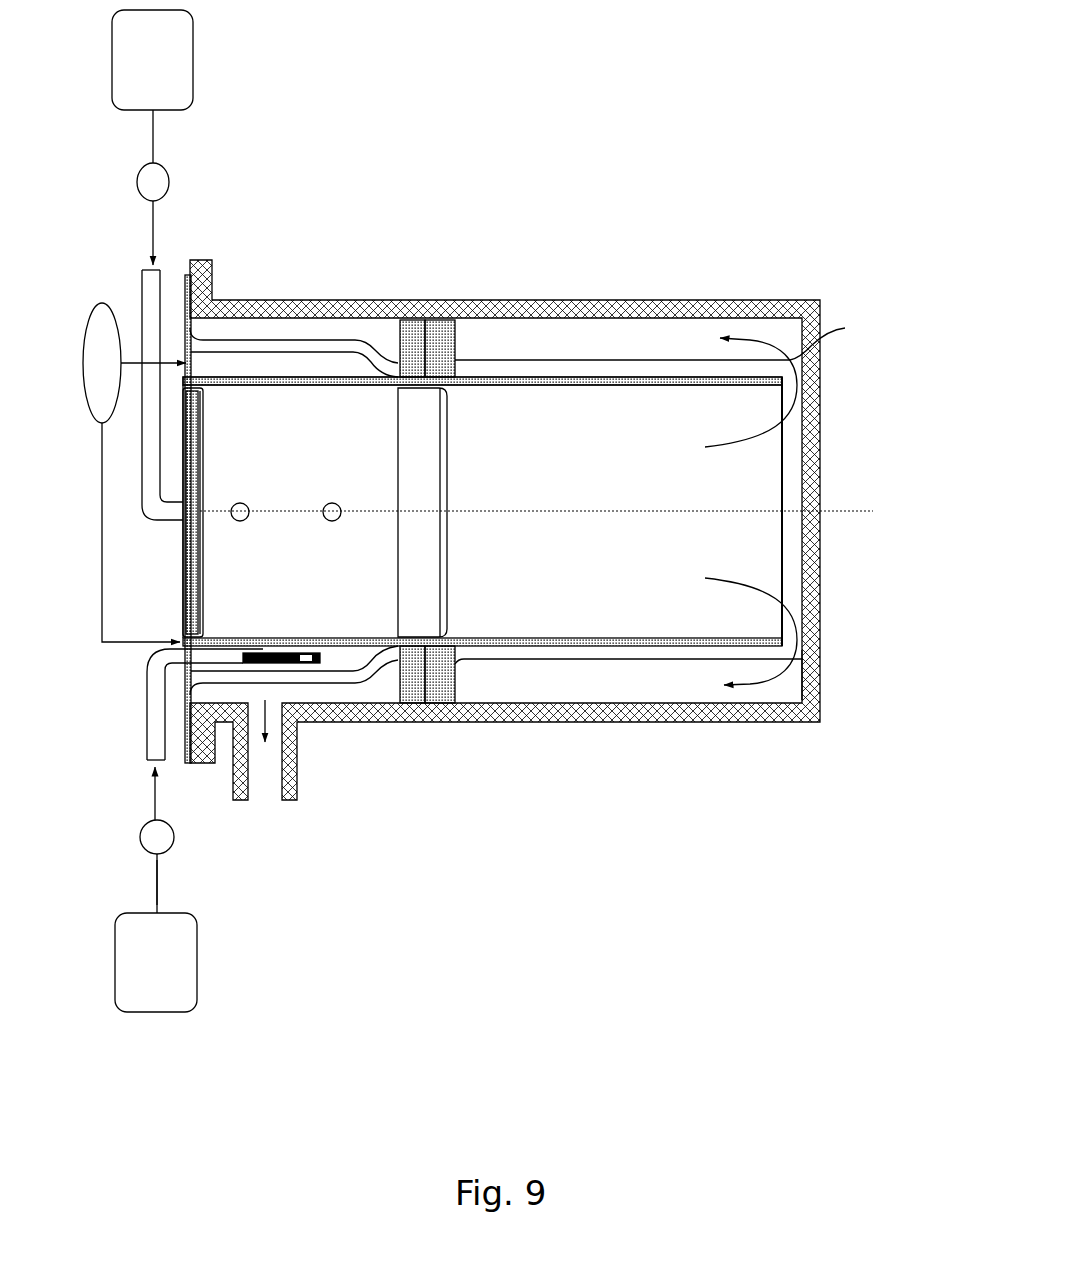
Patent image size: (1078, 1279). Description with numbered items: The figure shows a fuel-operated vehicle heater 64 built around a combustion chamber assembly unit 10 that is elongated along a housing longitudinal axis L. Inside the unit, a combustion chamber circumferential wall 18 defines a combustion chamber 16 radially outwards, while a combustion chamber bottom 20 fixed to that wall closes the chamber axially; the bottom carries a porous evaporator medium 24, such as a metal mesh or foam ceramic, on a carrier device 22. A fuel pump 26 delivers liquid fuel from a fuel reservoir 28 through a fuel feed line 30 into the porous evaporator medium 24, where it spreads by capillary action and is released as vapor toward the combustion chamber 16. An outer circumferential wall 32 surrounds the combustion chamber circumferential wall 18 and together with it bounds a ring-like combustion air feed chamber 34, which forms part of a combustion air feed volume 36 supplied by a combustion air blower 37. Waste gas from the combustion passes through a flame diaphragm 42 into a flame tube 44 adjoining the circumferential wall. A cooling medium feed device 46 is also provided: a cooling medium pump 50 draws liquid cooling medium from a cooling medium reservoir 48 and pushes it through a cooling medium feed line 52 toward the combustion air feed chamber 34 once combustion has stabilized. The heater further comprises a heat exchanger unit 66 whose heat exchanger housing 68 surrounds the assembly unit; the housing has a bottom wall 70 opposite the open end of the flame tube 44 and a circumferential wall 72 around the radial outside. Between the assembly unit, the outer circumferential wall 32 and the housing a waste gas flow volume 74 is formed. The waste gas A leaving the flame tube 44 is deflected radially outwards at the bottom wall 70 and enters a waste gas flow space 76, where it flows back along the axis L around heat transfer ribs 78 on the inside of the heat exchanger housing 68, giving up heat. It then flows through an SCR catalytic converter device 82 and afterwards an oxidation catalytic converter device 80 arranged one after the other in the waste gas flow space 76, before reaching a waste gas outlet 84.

The combustion chamber assembly unit 10 is at (796, 460).
The combustion chamber 16 is at (360, 413).
The combustion chamber circumferential wall 18 is at (264, 380).
The combustion chamber bottom 20 is at (178, 540).
The carrier device 22 is at (180, 563).
The porous evaporator medium 24 is at (180, 600).
The fuel pump 26 is at (171, 180).
The fuel reservoir 28 is at (193, 55).
The fuel feed line 30 is at (140, 268).
The outer circumferential wall 32 is at (310, 347).
The combustion air feed chamber 34 is at (337, 370).
The combustion air feed volume 36 is at (174, 383).
The combustion air blower 37 is at (102, 303).
The flame diaphragm 42 is at (447, 428).
The flame tube 44 is at (693, 640).
The cooling medium feed device 46 is at (219, 895).
The cooling medium reservoir 48 is at (143, 1013).
The cooling medium pump 50 is at (142, 826).
The cooling medium feed line 52 is at (143, 700).
The fuel-operated vehicle heater 64 is at (818, 146).
The heat exchanger unit 66 is at (852, 657).
The heat exchanger housing 68 is at (792, 297).
The bottom wall 70 is at (820, 572).
The circumferential wall 72 is at (783, 720).
The waste gas flow volume 74 is at (793, 540).
The waste gas flow space 76 is at (623, 647).
The heat transfer ribs 78 is at (643, 338).
The oxidation catalytic converter device 80 is at (407, 690).
The SCR catalytic converter device 82 is at (433, 690).
The waste gas outlet 84 is at (272, 805).
The waste gas A is at (840, 327).
The housing longitudinal axis L is at (860, 505).